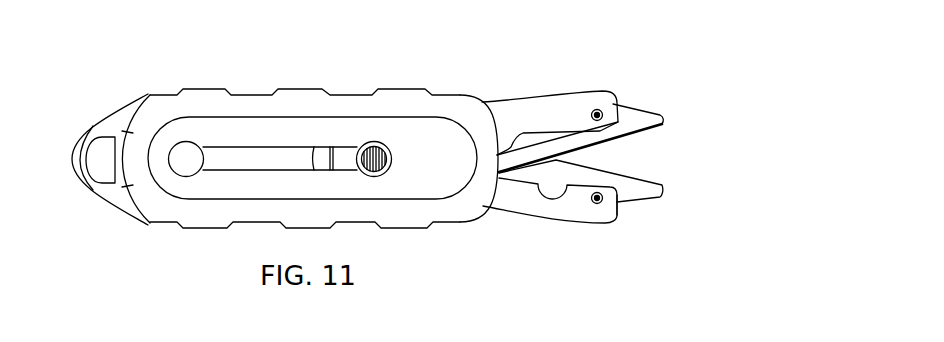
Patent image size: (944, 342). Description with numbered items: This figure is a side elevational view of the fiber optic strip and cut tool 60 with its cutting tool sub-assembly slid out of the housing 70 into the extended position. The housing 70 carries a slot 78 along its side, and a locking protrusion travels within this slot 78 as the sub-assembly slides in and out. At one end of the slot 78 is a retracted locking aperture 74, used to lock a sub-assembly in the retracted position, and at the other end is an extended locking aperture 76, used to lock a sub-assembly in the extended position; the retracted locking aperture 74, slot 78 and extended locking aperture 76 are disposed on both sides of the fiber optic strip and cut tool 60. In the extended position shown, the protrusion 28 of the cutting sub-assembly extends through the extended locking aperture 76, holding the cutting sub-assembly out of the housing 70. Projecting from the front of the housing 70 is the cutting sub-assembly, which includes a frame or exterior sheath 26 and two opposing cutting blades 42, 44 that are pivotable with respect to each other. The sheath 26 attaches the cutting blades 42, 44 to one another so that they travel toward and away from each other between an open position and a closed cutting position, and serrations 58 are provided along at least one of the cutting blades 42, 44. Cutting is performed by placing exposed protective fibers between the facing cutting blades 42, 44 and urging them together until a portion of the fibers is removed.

The fiber optic strip and cut tool 60 is at (586, 35).
The housing 70 is at (205, 217).
The retracted locking aperture 74 is at (190, 142).
The slot 78 is at (278, 145).
The extended locking aperture 76 is at (378, 177).
The protrusion 28 is at (368, 141).
The sheath 26 is at (520, 112).
The cutting blade 42 is at (630, 118).
The serrations 58 is at (637, 180).
The cutting blade 44 is at (633, 196).